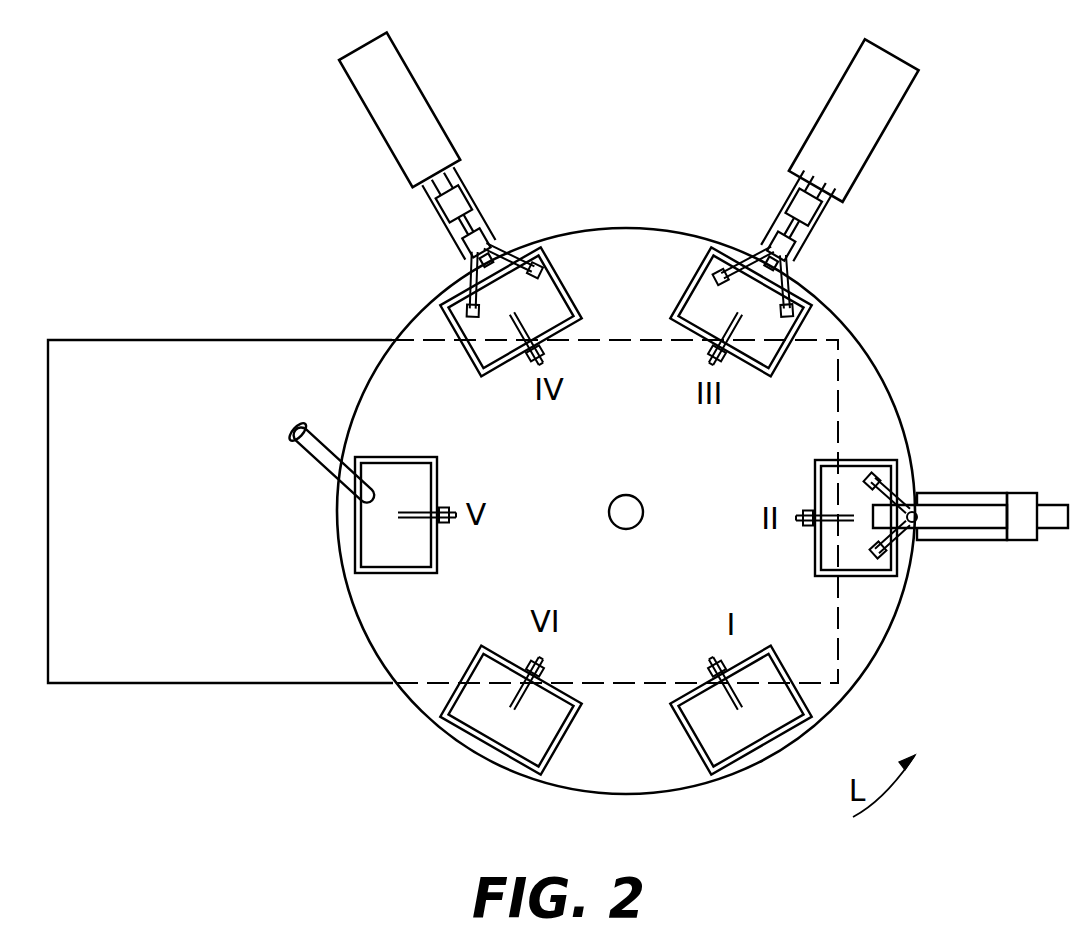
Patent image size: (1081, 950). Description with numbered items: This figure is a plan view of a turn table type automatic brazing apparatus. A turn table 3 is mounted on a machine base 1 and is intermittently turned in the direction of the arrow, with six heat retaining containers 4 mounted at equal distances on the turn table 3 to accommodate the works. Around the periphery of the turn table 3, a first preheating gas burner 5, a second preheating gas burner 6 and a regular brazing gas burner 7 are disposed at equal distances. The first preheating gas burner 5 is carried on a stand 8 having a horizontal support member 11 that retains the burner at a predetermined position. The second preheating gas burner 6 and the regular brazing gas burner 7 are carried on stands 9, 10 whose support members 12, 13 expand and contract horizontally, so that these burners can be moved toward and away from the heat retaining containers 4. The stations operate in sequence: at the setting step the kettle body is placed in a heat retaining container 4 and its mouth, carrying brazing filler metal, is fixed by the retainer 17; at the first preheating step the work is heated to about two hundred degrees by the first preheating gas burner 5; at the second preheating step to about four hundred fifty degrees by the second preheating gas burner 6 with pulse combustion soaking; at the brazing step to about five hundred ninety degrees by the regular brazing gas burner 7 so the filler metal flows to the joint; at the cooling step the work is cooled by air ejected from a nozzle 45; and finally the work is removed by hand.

The machine base 1 is at (236, 668).
The turn table 3 is at (872, 633).
The heat retaining container 4 is at (558, 742).
The first preheating gas burner 5 is at (905, 497).
The second preheating gas burner 6 is at (745, 250).
The regular brazing gas burner 7 is at (500, 243).
The stand 8 is at (1023, 541).
The stand 9 is at (800, 148).
The stand 10 is at (512, 167).
The horizontal support member 11 is at (975, 520).
The support member 12 is at (790, 243).
The support member 13 is at (473, 212).
The retainer 17 is at (705, 670).
The nozzle 45 is at (320, 437).